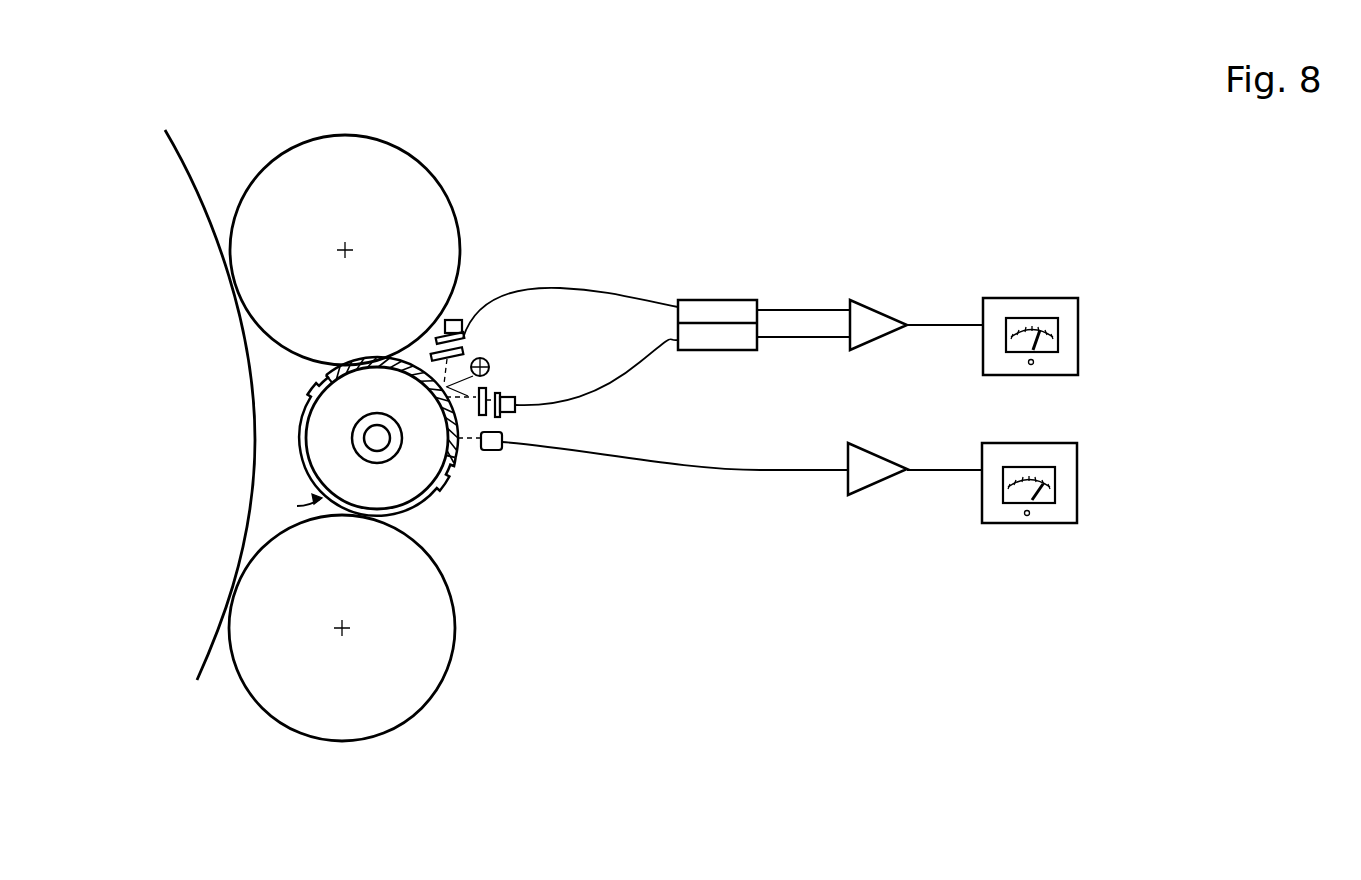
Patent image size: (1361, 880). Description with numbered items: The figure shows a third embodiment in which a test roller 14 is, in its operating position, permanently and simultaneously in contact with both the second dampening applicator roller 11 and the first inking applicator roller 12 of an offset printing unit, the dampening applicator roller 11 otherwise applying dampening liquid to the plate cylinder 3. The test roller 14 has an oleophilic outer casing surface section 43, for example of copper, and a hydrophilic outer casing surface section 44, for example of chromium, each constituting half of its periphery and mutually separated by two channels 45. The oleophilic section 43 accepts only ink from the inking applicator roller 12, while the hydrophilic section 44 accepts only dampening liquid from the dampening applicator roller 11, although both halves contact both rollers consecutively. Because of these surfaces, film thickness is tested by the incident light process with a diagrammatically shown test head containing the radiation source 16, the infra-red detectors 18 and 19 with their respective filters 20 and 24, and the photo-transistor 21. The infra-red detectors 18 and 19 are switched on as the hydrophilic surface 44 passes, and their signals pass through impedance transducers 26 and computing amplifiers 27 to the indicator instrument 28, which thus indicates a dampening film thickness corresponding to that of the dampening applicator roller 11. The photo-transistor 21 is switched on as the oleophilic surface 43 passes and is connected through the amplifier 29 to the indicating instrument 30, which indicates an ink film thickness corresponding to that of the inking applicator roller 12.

The plate cylinder 3 is at (200, 183).
The second dampening applicator roller 11 is at (393, 572).
The first inking applicator roller 12 is at (412, 200).
The test roller 14 is at (372, 493).
The radiation source 16 is at (487, 360).
The infra-red detector 18 is at (456, 320).
The infra-red detector 19 is at (514, 397).
The filter 20 is at (466, 346).
The photo-transistor 21 is at (503, 437).
The filter 24 is at (490, 390).
The impedance transducer 26 is at (742, 312).
The computing amplifier 27 is at (872, 318).
The indicator instrument 28 is at (1002, 312).
The amplifier 29 is at (876, 472).
The indicating instrument 30 is at (1062, 504).
The oleophilic outer casing surface section 43 is at (462, 468).
The hydrophilic outer casing surface section 44 is at (289, 502).
The channel 45 is at (440, 495).